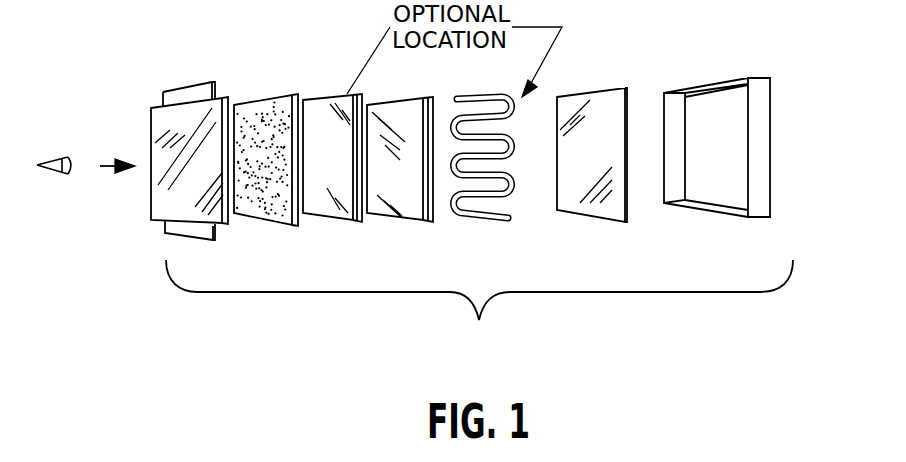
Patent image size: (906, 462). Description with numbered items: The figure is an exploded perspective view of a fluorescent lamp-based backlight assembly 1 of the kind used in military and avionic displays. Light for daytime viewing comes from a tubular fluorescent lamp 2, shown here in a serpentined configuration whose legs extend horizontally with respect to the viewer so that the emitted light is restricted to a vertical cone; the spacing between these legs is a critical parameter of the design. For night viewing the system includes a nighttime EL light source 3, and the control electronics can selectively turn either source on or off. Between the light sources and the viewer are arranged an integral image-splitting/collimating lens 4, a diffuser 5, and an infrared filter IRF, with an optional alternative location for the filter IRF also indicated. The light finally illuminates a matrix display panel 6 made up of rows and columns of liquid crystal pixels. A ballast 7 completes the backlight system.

The backlight assembly 1 is at (479, 322).
The tubular fluorescent lamp 2 is at (494, 95).
The nighttime EL light source 3 is at (592, 90).
The integral image-splitting/collimating lens 4 is at (400, 104).
The diffuser 5 is at (260, 98).
The matrix display panel 6 is at (187, 91).
The ballast 7 is at (765, 86).
The infrared filter IRF is at (327, 93).